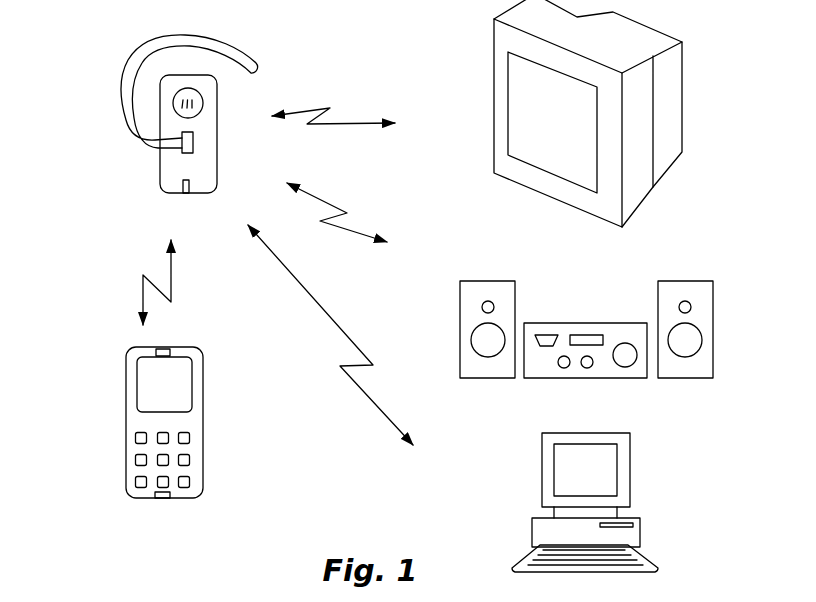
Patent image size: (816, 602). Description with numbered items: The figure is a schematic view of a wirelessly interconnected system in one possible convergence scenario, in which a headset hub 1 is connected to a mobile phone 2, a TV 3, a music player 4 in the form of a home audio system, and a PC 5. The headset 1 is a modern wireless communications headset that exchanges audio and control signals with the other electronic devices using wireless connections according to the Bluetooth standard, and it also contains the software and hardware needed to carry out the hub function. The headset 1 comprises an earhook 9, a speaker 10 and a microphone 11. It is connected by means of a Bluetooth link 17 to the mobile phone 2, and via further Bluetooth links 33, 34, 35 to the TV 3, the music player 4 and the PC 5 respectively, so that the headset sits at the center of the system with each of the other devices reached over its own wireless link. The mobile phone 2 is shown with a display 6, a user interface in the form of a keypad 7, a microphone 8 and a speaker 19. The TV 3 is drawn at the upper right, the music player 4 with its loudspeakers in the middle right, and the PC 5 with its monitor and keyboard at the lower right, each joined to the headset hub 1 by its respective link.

The headset hub 1 is at (170, 172).
The earhook 9 is at (128, 77).
The speaker 10 is at (203, 104).
The microphone 11 is at (186, 193).
The mobile phone 2 is at (128, 425).
The display 6 is at (157, 385).
The keypad 7 is at (140, 458).
The microphone 8 is at (162, 500).
The speaker 19 is at (155, 352).
The Bluetooth link 17 is at (173, 282).
The TV 3 is at (670, 128).
The music player 4 is at (703, 253).
The PC 5 is at (623, 480).
The Bluetooth link 33 is at (333, 105).
The Bluetooth link 34 is at (337, 212).
The Bluetooth link 35 is at (330, 335).